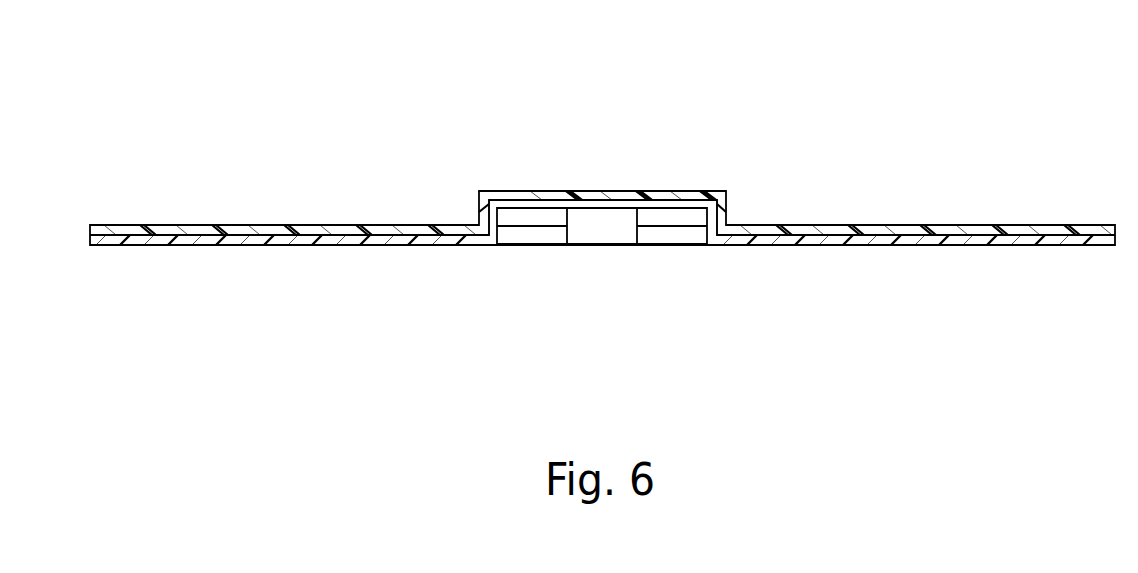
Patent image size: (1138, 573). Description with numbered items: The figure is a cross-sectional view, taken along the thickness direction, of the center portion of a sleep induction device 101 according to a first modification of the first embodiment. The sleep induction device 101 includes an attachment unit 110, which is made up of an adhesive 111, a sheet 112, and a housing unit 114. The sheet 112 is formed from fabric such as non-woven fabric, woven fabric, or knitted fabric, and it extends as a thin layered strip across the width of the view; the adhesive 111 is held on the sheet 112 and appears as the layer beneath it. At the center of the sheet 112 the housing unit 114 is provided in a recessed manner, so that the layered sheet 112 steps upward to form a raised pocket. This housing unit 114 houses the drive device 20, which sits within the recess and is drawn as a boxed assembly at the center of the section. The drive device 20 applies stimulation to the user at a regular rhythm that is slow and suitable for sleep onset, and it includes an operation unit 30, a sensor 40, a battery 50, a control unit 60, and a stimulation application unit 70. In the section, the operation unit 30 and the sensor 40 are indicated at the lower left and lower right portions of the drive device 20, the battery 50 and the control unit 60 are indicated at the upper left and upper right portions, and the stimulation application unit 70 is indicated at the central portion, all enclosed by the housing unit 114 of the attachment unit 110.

The sleep induction device 101 is at (602, 187).
The attachment unit 110 is at (602, 239).
The adhesive 111 is at (286, 246).
The sheet 112 is at (320, 224).
The housing unit 114 is at (497, 246).
The drive device 20 is at (627, 224).
The operation unit 30 is at (532, 236).
The sensor 40 is at (670, 234).
The battery 50 is at (531, 217).
The control unit 60 is at (667, 214).
The stimulation application unit 70 is at (603, 226).